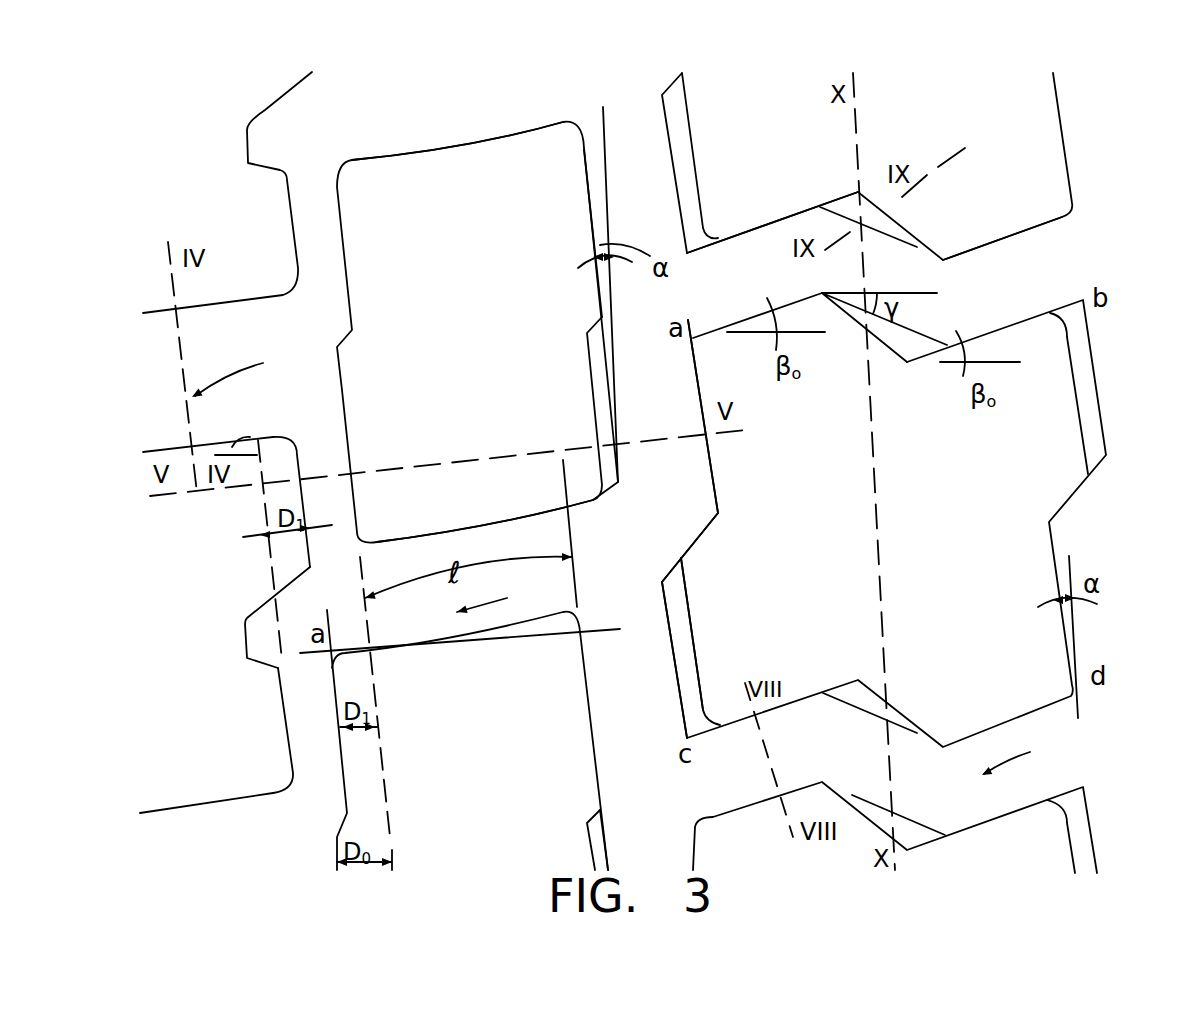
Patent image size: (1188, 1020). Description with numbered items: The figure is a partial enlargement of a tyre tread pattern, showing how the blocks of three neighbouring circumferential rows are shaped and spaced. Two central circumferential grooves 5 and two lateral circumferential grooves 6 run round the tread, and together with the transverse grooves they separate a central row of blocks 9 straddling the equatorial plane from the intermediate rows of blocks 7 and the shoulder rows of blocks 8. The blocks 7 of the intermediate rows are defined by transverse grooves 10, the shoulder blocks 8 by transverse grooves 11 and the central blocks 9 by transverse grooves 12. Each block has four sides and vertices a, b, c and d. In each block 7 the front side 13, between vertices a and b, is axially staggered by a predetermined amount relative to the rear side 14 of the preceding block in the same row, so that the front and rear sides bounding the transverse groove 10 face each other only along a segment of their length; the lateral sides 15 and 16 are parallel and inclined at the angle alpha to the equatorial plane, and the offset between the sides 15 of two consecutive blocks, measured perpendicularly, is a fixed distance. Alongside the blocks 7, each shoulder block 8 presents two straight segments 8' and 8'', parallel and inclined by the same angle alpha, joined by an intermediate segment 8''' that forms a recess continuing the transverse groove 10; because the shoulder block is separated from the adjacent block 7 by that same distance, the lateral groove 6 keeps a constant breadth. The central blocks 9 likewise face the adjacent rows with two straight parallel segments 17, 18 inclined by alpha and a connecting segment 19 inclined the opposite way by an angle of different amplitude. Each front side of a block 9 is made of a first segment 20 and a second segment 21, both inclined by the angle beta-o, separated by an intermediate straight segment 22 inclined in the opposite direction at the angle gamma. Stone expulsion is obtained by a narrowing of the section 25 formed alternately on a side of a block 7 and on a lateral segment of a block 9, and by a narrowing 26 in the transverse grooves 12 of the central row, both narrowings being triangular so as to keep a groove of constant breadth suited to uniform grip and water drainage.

The central circumferential groove 5 is at (627, 228).
The lateral circumferential groove 6 is at (321, 247).
The intermediate row block 7 is at (418, 182).
The shoulder row block 8 is at (226, 471).
The straight segment of shoulder block 8' is at (261, 730).
The straight segment of shoulder block 8'' is at (244, 478).
The intermediate connecting segment 8''' is at (236, 619).
The central row block 9 is at (1037, 163).
The transverse groove of intermediate row 10 is at (501, 597).
The transverse groove of shoulder row 11 is at (248, 372).
The transverse groove of central row 12 is at (1026, 753).
The front side 13 is at (467, 145).
The rear side 14 is at (455, 528).
The lateral side 15 is at (350, 458).
The lateral side 16 is at (590, 225).
The straight parallel segment of central block 17 is at (700, 412).
The straight parallel segment of central block 18 is at (703, 690).
The intermediate connecting segment of central block 19 is at (700, 543).
The first segment of front side 20 is at (780, 217).
The second segment of front side 21 is at (992, 240).
The intermediate segment of front side 22 is at (873, 229).
The section narrowing 25 is at (683, 660).
The section narrowing 26 is at (838, 695).